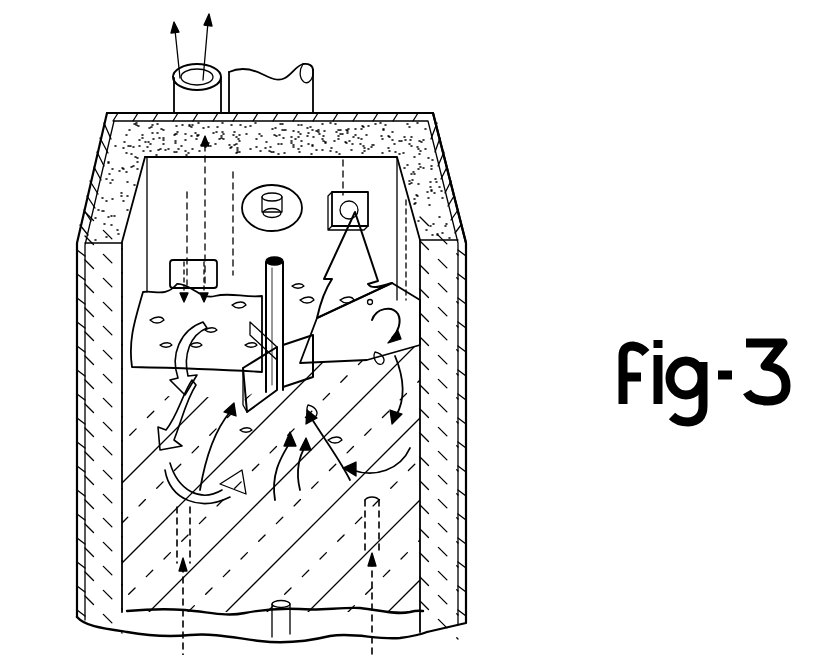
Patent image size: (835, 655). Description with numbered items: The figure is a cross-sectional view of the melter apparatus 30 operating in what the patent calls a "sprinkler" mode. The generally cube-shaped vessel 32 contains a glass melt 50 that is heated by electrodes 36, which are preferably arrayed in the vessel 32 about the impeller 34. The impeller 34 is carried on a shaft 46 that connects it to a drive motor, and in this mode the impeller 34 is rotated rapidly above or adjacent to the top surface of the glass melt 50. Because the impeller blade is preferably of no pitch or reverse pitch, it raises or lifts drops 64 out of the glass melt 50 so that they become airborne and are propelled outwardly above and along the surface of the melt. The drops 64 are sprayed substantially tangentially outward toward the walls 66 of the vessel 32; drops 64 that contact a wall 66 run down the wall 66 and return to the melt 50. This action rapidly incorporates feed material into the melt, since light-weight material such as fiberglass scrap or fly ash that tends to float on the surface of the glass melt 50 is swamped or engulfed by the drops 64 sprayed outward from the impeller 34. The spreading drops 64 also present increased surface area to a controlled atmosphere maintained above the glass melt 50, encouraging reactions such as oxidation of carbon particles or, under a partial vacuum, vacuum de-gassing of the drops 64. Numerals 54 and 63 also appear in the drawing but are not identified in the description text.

The melter apparatus 30 is at (580, 82).
The vessel 32 is at (458, 196).
The impeller 34 is at (302, 357).
The electrodes 36 is at (363, 537).
The shaft 46 is at (260, 272).
The glass melt 50 is at (392, 307).
The vent tube 54 is at (219, 67).
The solid material 63 is at (242, 397).
The drops 64 is at (388, 326).
The walls 66 is at (412, 458).